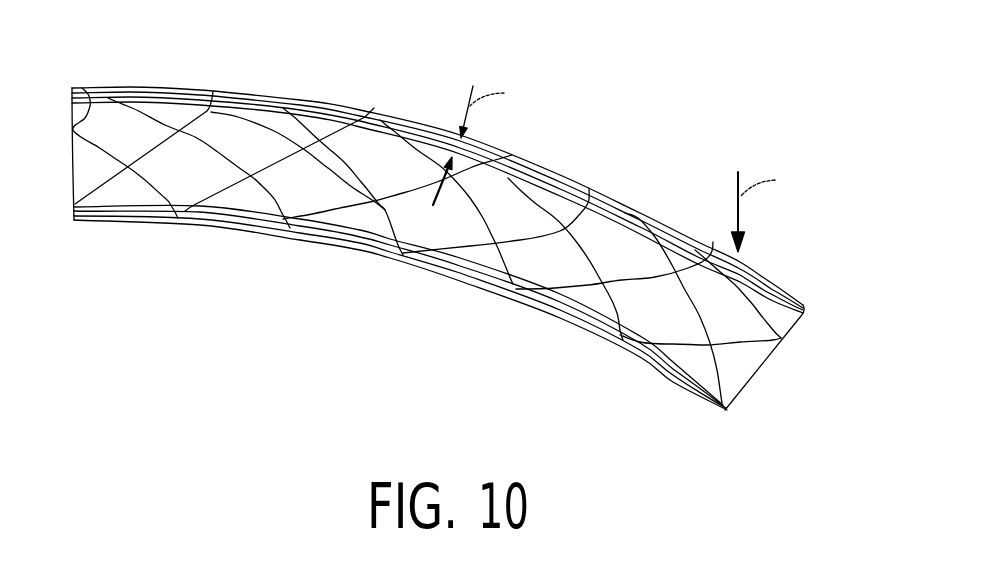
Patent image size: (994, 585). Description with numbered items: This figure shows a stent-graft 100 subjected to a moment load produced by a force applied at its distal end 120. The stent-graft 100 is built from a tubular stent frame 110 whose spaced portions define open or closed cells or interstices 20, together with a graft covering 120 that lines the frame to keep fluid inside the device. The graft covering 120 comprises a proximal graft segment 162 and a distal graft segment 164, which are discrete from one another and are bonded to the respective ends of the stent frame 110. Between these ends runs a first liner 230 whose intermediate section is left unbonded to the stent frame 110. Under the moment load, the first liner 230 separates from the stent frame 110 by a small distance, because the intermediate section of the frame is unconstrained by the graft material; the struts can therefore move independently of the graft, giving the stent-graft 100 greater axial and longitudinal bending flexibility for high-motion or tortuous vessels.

The stent-graft 100 is at (210, 280).
The stent frame 110 is at (257, 90).
The graft covering 120 is at (782, 259).
The proximal graft segment 162 is at (80, 87).
The distal graft segment 164 is at (786, 288).
The cells or interstices 20 is at (320, 169).
The first liner 230 is at (528, 175).